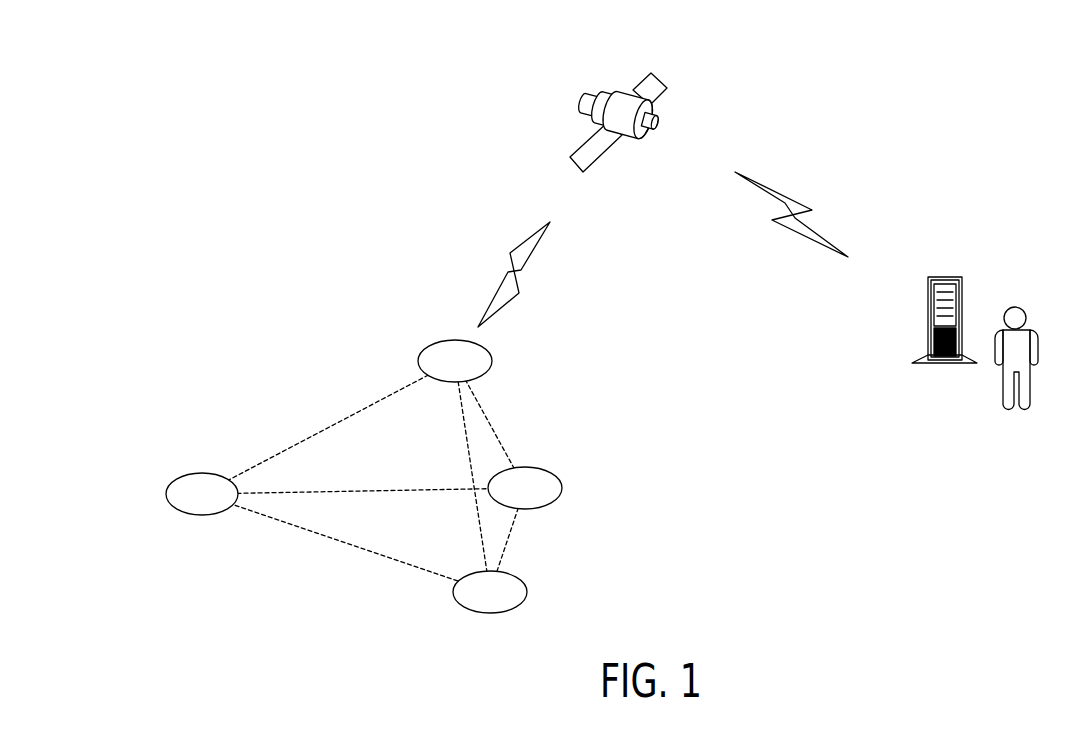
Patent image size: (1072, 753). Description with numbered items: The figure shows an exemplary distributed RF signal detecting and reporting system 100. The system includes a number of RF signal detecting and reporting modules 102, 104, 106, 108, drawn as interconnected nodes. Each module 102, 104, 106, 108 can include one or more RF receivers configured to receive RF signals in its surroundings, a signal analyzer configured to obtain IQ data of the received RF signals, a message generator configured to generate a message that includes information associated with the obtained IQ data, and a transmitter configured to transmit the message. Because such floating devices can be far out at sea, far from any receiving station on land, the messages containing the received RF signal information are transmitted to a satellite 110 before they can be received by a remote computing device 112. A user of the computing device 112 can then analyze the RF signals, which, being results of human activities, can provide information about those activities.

The distributed RF signal detecting and reporting system 100 is at (372, 97).
The RF signal detecting and reporting module 102 is at (215, 507).
The RF signal detecting and reporting module 104 is at (468, 373).
The RF signal detecting and reporting module 106 is at (502, 607).
The RF signal detecting and reporting module 108 is at (538, 502).
The satellite 110 is at (660, 80).
The remote computing device 112 is at (943, 277).